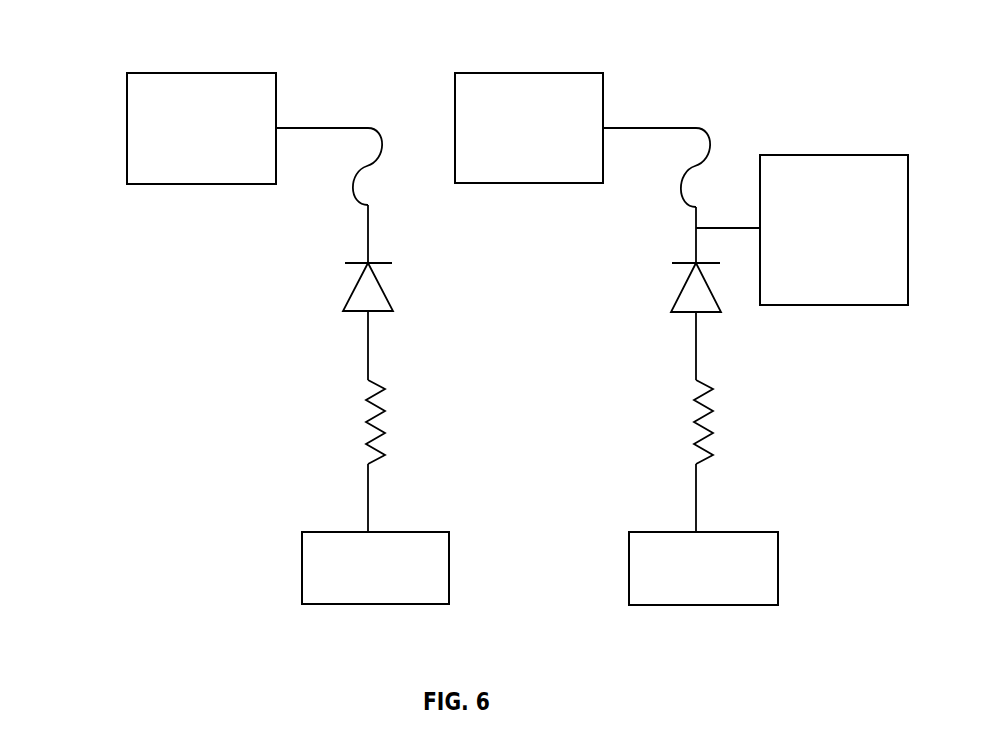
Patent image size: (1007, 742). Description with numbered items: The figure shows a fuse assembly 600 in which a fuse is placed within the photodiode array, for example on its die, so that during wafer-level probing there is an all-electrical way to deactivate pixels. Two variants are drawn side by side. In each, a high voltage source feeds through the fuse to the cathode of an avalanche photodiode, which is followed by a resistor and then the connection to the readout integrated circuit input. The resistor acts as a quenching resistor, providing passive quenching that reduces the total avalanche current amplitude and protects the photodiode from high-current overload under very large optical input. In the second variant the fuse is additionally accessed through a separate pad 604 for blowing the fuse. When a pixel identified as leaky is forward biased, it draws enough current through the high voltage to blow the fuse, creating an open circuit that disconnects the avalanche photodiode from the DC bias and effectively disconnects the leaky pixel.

The fuse assembly 600 is at (73, 78).
The pad 604 is at (908, 213).